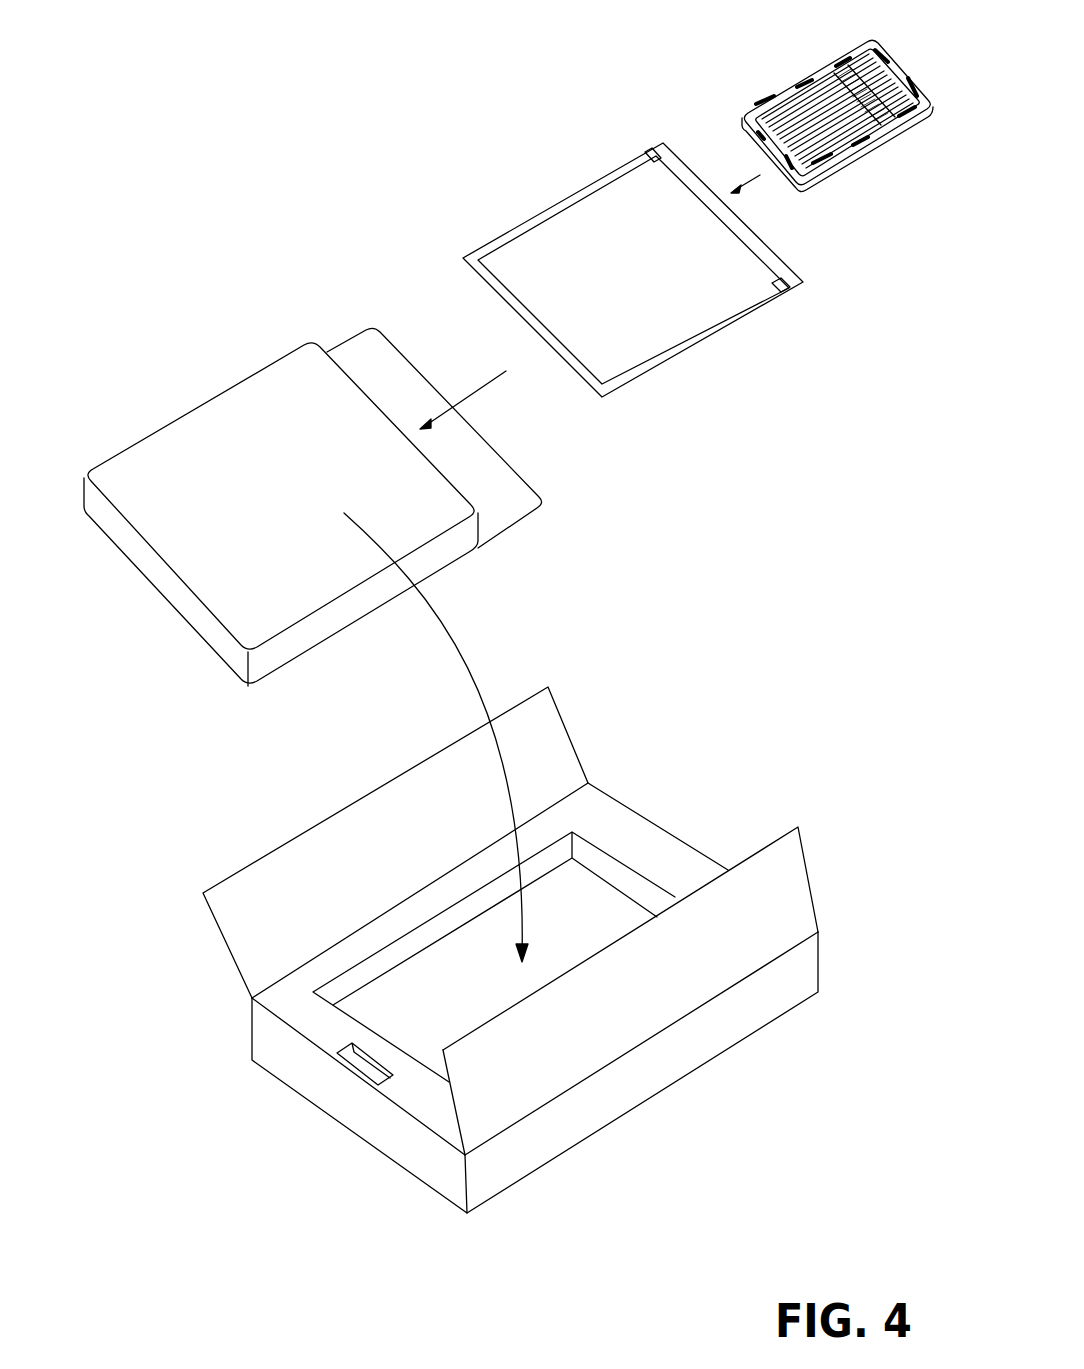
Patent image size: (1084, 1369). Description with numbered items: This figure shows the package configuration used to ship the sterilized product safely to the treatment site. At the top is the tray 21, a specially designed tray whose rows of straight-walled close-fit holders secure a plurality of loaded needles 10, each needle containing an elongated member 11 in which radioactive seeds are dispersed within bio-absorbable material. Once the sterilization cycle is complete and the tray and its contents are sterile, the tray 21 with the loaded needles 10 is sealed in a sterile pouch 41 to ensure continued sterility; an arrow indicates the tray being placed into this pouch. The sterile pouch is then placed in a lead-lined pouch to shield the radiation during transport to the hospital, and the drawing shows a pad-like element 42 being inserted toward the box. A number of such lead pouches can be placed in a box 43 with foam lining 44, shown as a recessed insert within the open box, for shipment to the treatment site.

The loaded needles 10 is at (895, 115).
The elongated member 11 is at (782, 97).
The tray 21 is at (902, 62).
The sterile pouch 41 is at (668, 163).
The cushion pad 42 is at (269, 394).
The box 43 is at (548, 760).
The foam lining 44 is at (635, 843).